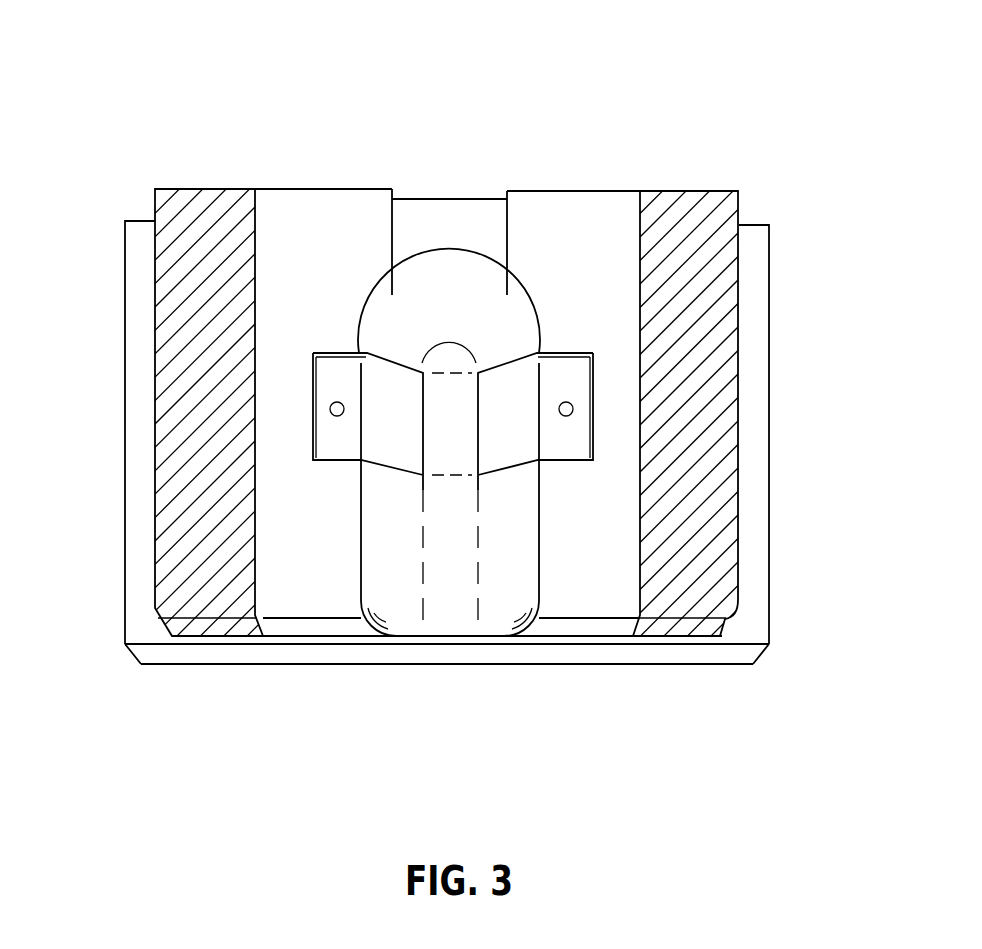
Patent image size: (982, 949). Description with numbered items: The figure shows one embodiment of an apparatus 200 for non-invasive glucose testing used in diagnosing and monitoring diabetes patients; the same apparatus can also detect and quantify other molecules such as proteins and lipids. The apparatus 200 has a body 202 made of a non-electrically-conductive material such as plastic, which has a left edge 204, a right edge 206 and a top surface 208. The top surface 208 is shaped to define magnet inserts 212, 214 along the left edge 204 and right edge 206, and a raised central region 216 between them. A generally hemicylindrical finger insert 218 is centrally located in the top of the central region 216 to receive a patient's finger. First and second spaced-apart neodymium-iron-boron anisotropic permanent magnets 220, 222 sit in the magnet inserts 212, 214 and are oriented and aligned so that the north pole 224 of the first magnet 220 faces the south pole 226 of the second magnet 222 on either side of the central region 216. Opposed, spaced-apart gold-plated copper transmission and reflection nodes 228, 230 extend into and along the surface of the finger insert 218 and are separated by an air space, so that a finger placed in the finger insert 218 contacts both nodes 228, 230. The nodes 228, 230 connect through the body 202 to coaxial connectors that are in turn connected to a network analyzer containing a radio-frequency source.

The apparatus 200 is at (562, 80).
The body 202 is at (283, 655).
The left edge 204 is at (125, 527).
The right edge 206 is at (769, 541).
The top surface 208 is at (337, 242).
The magnet insert 212 is at (140, 280).
The magnet insert 214 is at (758, 290).
The raised central region 216 is at (363, 200).
The finger insert 218 is at (452, 608).
The first permanent magnet 220 is at (210, 237).
The second permanent magnet 222 is at (705, 363).
The north pole 224 is at (257, 309).
The south pole 226 is at (638, 252).
The transmission node 228 is at (338, 425).
The reflection node 230 is at (570, 430).